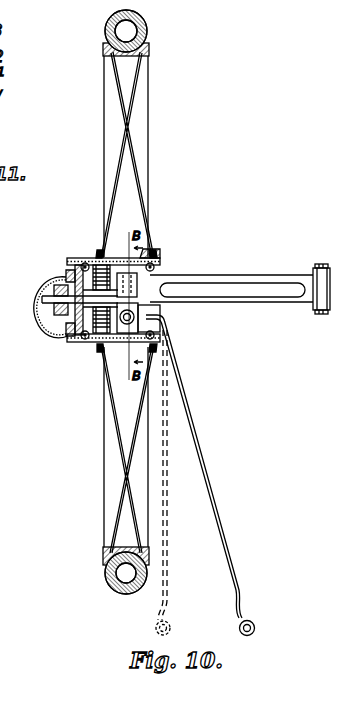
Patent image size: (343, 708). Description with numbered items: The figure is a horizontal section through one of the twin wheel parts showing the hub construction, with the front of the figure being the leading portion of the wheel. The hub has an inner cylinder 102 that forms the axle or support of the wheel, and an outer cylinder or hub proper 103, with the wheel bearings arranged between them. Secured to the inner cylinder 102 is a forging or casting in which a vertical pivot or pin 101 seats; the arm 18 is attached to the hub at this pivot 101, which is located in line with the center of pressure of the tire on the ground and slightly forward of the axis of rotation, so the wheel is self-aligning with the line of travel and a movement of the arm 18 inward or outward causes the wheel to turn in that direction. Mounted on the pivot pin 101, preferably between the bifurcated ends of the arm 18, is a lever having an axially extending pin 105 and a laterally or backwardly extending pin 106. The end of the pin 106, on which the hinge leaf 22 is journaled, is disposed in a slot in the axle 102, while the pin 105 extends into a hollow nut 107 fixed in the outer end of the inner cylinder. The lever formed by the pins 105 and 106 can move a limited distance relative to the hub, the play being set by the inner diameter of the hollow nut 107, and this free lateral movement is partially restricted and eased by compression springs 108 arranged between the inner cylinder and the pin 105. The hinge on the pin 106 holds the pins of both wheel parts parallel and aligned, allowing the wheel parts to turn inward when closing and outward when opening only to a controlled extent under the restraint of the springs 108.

The arm 18 is at (208, 462).
The hinge leaf 22 is at (274, 277).
The vertical pivot or pin 101 is at (153, 305).
The inner cylinder 102 is at (97, 348).
The outer cylinder or hub proper 103 is at (113, 257).
The axially extending pin 105 is at (56, 306).
The laterally or backwardly extending pin 106 is at (161, 257).
The hollow nut 107 is at (57, 284).
The compression springs 108 is at (100, 266).